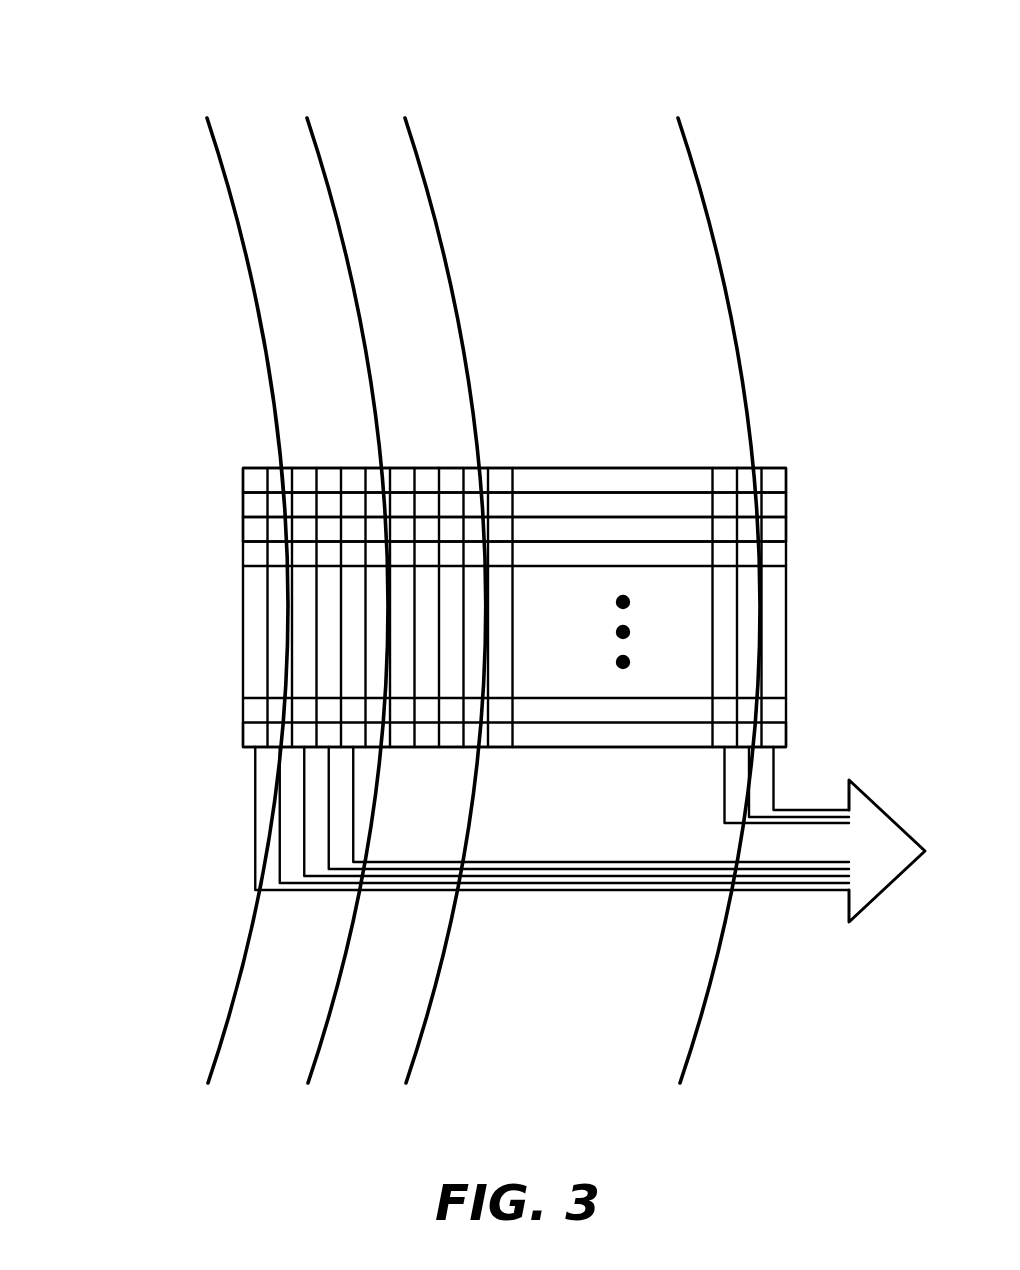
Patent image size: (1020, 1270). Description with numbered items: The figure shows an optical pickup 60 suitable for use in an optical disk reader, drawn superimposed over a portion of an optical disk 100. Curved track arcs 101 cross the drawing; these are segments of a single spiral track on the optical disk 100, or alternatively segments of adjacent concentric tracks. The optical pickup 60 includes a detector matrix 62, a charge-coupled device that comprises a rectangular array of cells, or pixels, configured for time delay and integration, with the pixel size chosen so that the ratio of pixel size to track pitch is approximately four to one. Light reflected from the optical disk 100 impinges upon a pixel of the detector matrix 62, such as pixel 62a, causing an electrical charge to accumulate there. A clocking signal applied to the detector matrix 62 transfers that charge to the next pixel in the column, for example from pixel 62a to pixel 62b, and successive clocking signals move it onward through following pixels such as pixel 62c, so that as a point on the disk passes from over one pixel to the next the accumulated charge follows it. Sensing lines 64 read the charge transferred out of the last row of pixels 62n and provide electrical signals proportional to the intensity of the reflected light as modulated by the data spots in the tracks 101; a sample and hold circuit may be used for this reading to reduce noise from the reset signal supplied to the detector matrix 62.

The optical pickup 60 is at (143, 378).
The detector matrix 62 is at (579, 467).
The pixel 62a is at (257, 482).
The pixel 62b is at (257, 505).
The third sensor element 62c is at (257, 530).
The last row of pixels 62n is at (257, 735).
The sensing lines 64 is at (830, 890).
The optical disk 100 is at (723, 282).
The track arcs 101 is at (685, 150).